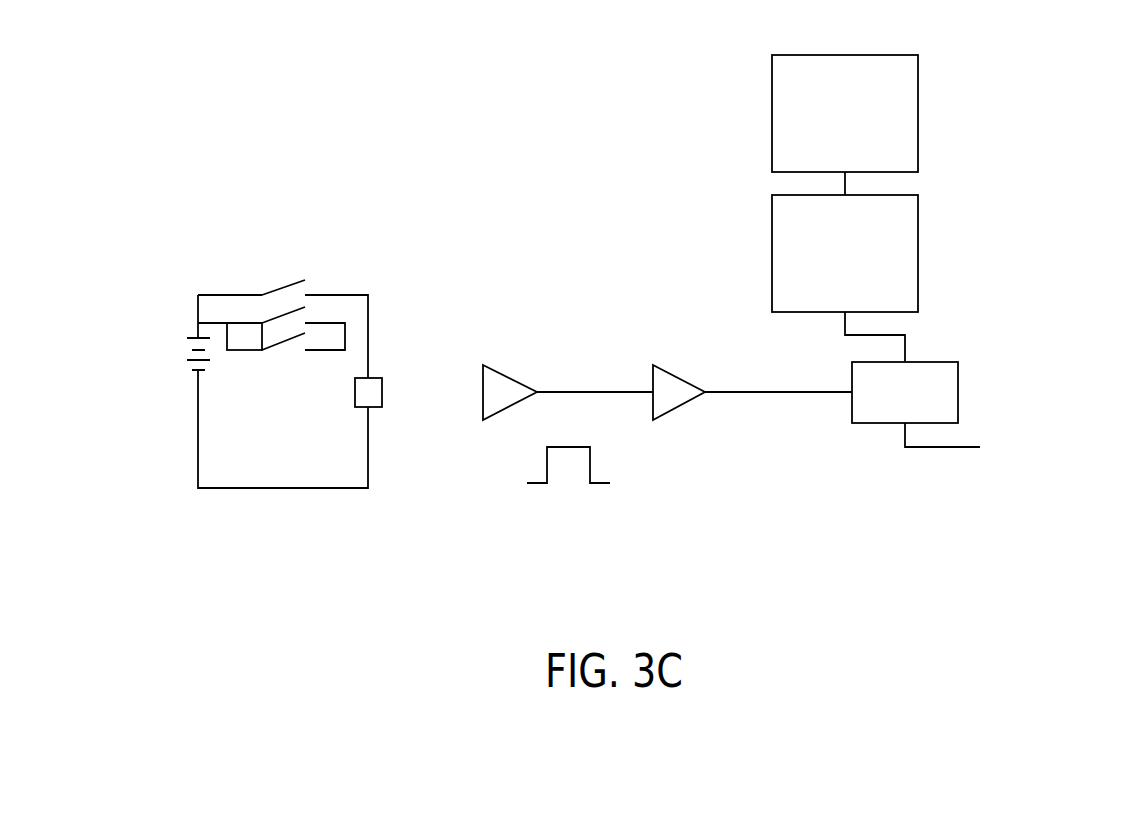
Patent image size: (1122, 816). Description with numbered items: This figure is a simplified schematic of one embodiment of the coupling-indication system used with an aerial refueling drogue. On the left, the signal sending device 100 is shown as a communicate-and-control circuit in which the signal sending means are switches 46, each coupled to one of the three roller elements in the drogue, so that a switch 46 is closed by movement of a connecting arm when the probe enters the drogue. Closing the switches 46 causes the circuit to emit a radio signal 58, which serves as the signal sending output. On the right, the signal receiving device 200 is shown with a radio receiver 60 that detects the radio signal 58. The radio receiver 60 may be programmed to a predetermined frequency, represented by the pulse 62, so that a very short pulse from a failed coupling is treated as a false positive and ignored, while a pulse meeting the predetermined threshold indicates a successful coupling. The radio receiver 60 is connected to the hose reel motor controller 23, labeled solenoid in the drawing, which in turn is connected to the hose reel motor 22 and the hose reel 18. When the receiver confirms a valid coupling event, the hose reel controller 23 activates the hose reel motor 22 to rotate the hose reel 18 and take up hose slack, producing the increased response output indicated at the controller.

The signal sending device 100 is at (318, 97).
The signal receiving device 200 is at (602, 280).
The mechanical switch 46 is at (257, 328).
The radio signal 58 is at (382, 393).
The radio receiver 60 is at (538, 389).
The pulse 62 is at (593, 465).
The hose reel 18 is at (918, 117).
The hose reel motor 22 is at (918, 253).
The hose reel motor controller 23 is at (958, 380).